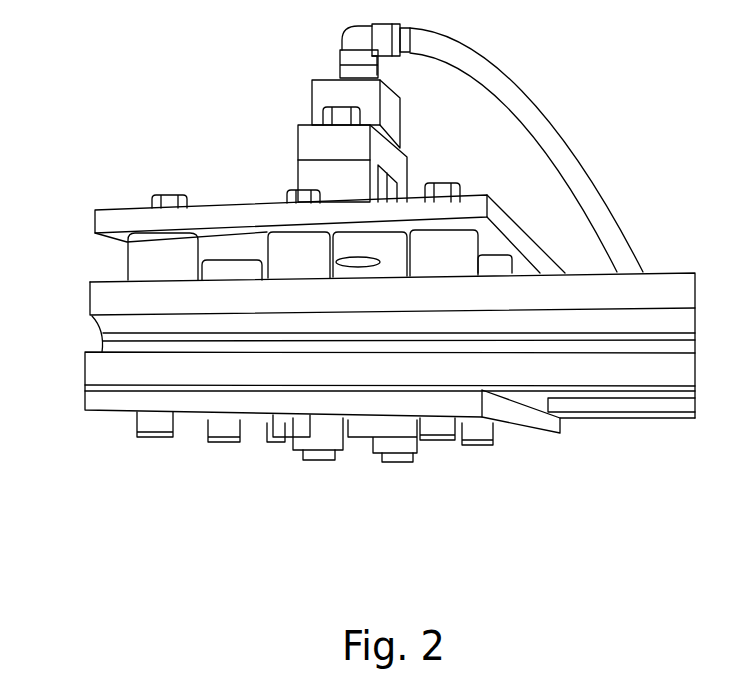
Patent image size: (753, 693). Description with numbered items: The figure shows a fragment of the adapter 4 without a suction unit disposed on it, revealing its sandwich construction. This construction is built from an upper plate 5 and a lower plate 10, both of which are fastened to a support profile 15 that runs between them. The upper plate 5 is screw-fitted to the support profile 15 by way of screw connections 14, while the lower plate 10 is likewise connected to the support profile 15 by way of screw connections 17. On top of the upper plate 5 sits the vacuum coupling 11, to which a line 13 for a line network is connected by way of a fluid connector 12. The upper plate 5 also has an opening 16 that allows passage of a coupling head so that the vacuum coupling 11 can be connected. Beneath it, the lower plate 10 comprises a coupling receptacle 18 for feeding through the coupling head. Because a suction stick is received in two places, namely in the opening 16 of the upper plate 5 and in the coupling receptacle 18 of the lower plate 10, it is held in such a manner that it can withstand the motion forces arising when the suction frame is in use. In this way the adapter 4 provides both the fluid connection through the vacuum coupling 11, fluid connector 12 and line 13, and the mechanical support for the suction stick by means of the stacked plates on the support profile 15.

The adapter 4 is at (110, 161).
The upper plate 5 is at (234, 218).
The lower plate 10 is at (101, 402).
The vacuum coupling 11 is at (287, 118).
The fluid connector 12 is at (388, 115).
The line 13 is at (525, 113).
The screw connections 14 is at (166, 196).
The support profile 15 is at (115, 297).
The opening 16 is at (357, 266).
The screw connections 17 is at (223, 434).
The coupling receptacle 18 is at (357, 445).